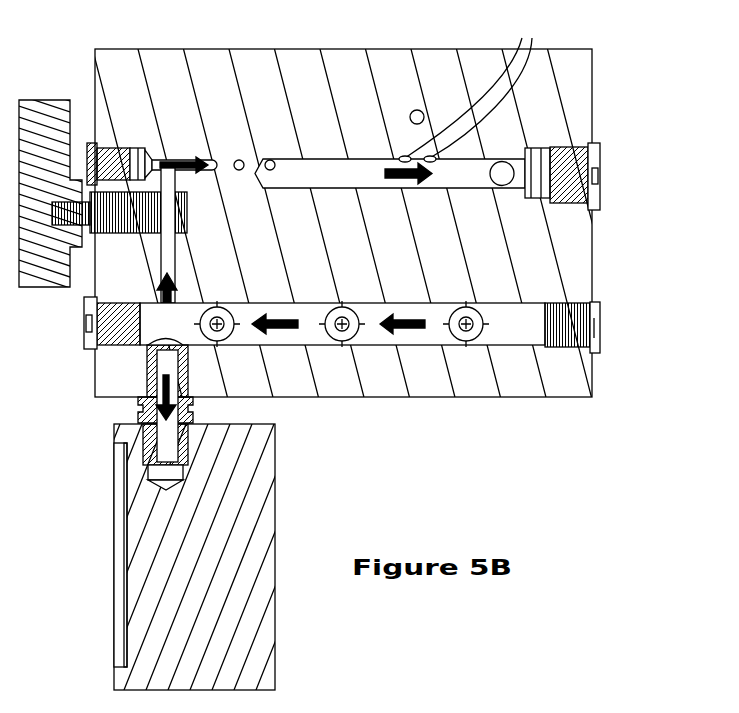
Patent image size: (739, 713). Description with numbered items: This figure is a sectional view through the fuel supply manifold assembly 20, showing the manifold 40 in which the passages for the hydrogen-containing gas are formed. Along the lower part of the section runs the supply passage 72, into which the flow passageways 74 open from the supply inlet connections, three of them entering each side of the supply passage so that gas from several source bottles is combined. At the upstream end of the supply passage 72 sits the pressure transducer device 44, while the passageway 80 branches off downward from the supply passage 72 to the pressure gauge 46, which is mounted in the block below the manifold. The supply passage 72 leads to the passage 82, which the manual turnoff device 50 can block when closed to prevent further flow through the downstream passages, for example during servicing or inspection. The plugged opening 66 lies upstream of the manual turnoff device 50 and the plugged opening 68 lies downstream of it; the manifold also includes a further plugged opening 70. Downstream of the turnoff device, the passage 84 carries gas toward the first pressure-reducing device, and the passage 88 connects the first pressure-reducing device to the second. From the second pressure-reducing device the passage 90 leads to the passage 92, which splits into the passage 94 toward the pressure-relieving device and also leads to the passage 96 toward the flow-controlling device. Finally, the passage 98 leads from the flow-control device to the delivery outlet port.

The fuel supply manifold assembly 20 is at (630, 80).
The manifold 40 is at (542, 82).
The pressure transducer device 44 is at (600, 325).
The pressure gauge 46 is at (228, 523).
The manual turnoff device 50 is at (58, 287).
The plugged opening 66 is at (86, 348).
The plugged opening 68 is at (87, 158).
The plugged opening 70 is at (600, 177).
The supply passage 72 is at (288, 316).
The flow passageways 74 is at (218, 322).
The passageway 80 is at (168, 450).
The passage 82 is at (170, 263).
The passage 84 is at (171, 160).
The passage 88 is at (239, 159).
The passage 90 is at (270, 159).
The passage 92 is at (350, 176).
The passage 94 is at (503, 170).
The passage 96 is at (471, 88).
The passage 98 is at (420, 110).